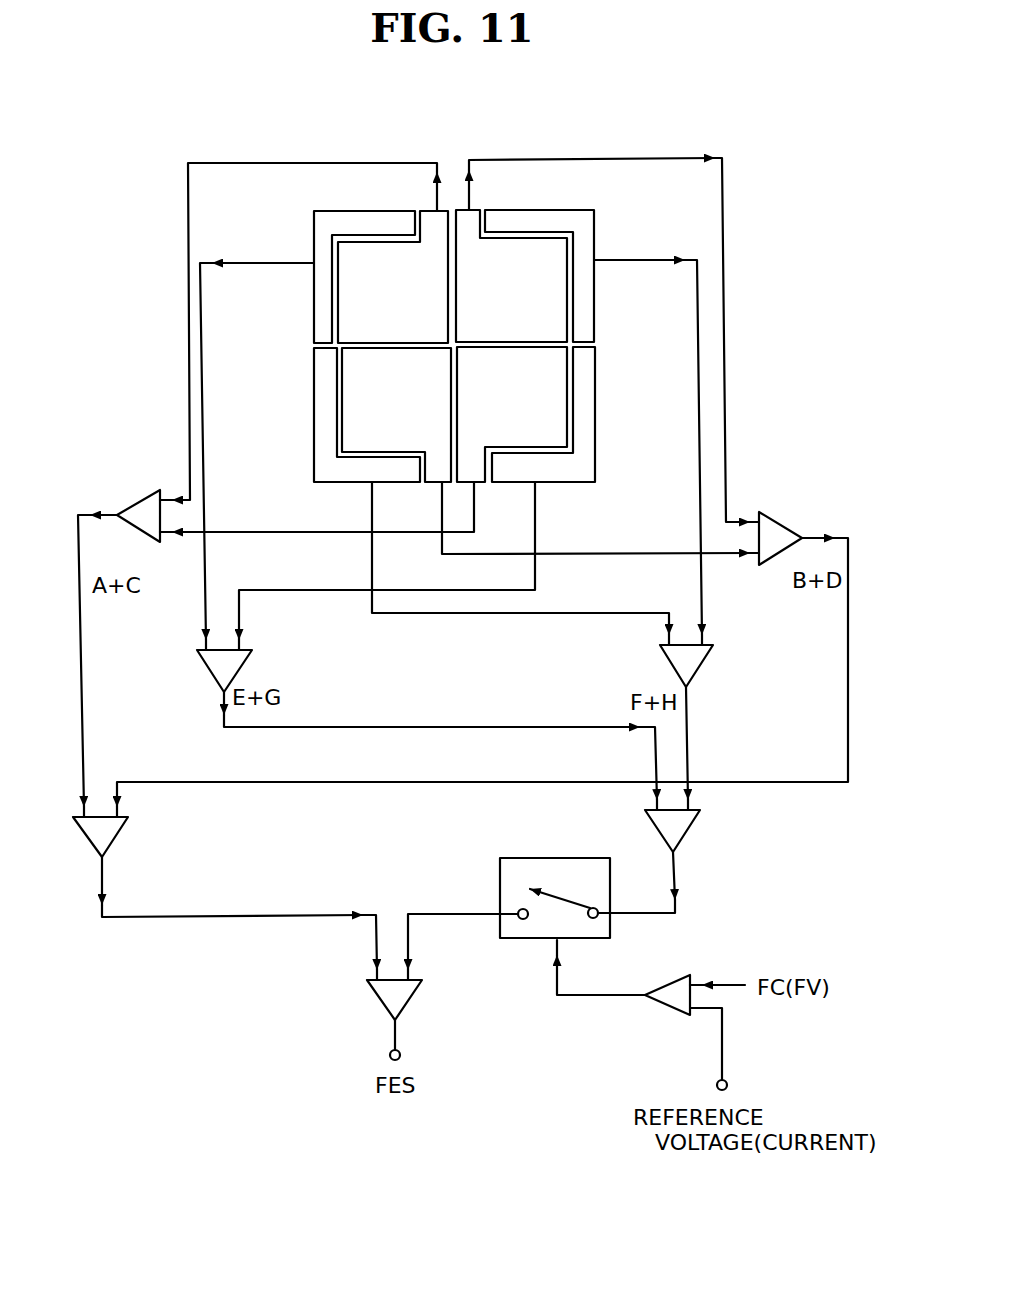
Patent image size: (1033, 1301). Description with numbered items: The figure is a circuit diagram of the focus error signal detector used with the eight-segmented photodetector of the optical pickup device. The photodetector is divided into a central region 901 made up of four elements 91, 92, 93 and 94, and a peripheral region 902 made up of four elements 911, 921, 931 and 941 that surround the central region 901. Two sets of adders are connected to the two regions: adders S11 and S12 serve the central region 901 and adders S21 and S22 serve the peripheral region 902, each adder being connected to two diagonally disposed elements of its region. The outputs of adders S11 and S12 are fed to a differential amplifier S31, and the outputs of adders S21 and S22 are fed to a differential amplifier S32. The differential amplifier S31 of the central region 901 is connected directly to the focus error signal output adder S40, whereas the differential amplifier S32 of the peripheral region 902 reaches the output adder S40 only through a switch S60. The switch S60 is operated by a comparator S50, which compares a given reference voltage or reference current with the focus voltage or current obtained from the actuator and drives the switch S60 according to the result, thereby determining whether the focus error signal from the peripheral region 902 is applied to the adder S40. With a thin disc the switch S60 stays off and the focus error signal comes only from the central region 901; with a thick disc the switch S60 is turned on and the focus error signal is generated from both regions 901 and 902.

The central region 901 is at (113, 273).
The element of central region 91 is at (351, 283).
The element of central region 92 is at (468, 308).
The element of central region 93 is at (357, 364).
The element of central region 94 is at (468, 385).
The peripheral region 902 is at (665, 170).
The element of peripheral region 911 is at (383, 219).
The element of peripheral region 921 is at (593, 223).
The element of peripheral region 931 is at (403, 466).
The element of peripheral region 941 is at (583, 361).
The adder S11 is at (135, 498).
The adder S12 is at (780, 523).
The adder S21 is at (207, 664).
The adder S22 is at (705, 657).
The differential amplifier S31 is at (120, 835).
The differential amplifier S32 is at (700, 822).
The focus error signal output adder S40 is at (410, 1000).
The comparator S50 is at (672, 975).
The switch S60 is at (527, 858).